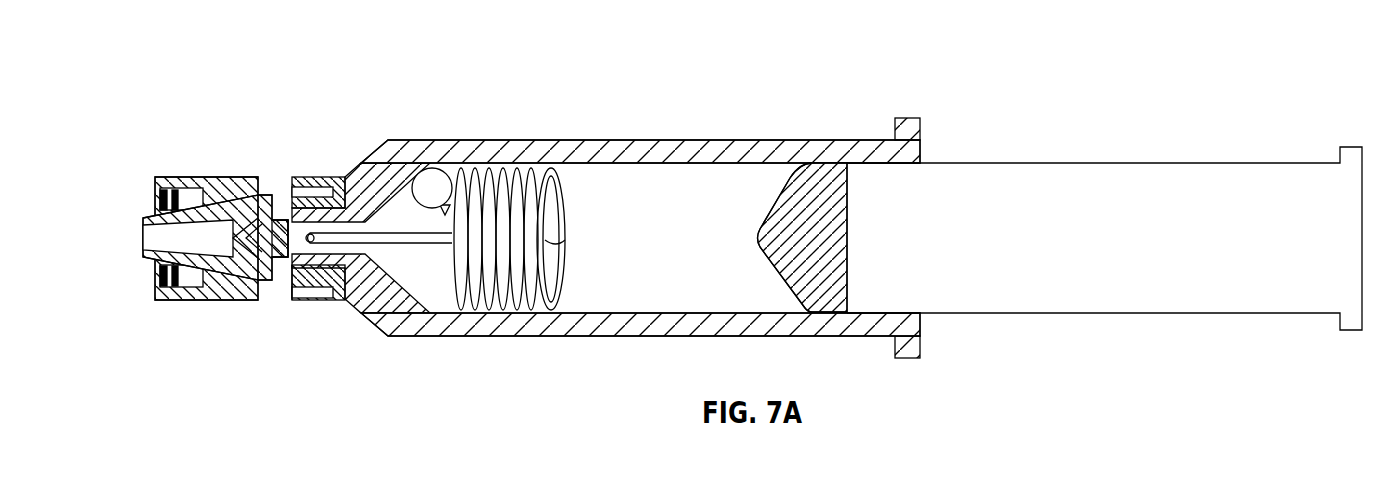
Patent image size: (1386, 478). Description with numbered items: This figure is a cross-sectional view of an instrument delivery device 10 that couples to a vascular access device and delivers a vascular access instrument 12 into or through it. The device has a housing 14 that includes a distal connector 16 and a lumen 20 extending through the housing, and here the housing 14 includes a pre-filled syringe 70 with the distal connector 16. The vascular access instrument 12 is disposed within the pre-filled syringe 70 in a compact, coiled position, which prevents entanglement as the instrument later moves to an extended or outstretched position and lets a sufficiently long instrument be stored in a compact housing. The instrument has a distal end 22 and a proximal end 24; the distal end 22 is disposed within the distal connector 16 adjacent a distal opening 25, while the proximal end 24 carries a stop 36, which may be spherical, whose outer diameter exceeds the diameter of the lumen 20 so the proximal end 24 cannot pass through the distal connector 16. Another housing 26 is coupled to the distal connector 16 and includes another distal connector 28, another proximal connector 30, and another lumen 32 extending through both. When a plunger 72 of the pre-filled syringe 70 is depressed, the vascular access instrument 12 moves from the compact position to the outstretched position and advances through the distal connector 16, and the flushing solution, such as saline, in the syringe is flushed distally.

The instrument delivery device 10 is at (1102, 57).
The vascular access instrument 12 is at (547, 140).
The housing 14 is at (668, 333).
The distal connector 16 is at (291, 288).
The lumen 20 is at (688, 190).
The distal end 22 is at (308, 240).
The proximal end 24 is at (446, 213).
The distal opening 25 is at (273, 217).
The other housing 26 is at (218, 187).
The other distal connector 28 is at (142, 223).
The other proximal connector 30 is at (333, 283).
The other lumen 32 is at (208, 250).
The stop 36 is at (430, 182).
The pre-filled syringe 70 is at (830, 160).
The plunger 72 is at (1080, 177).